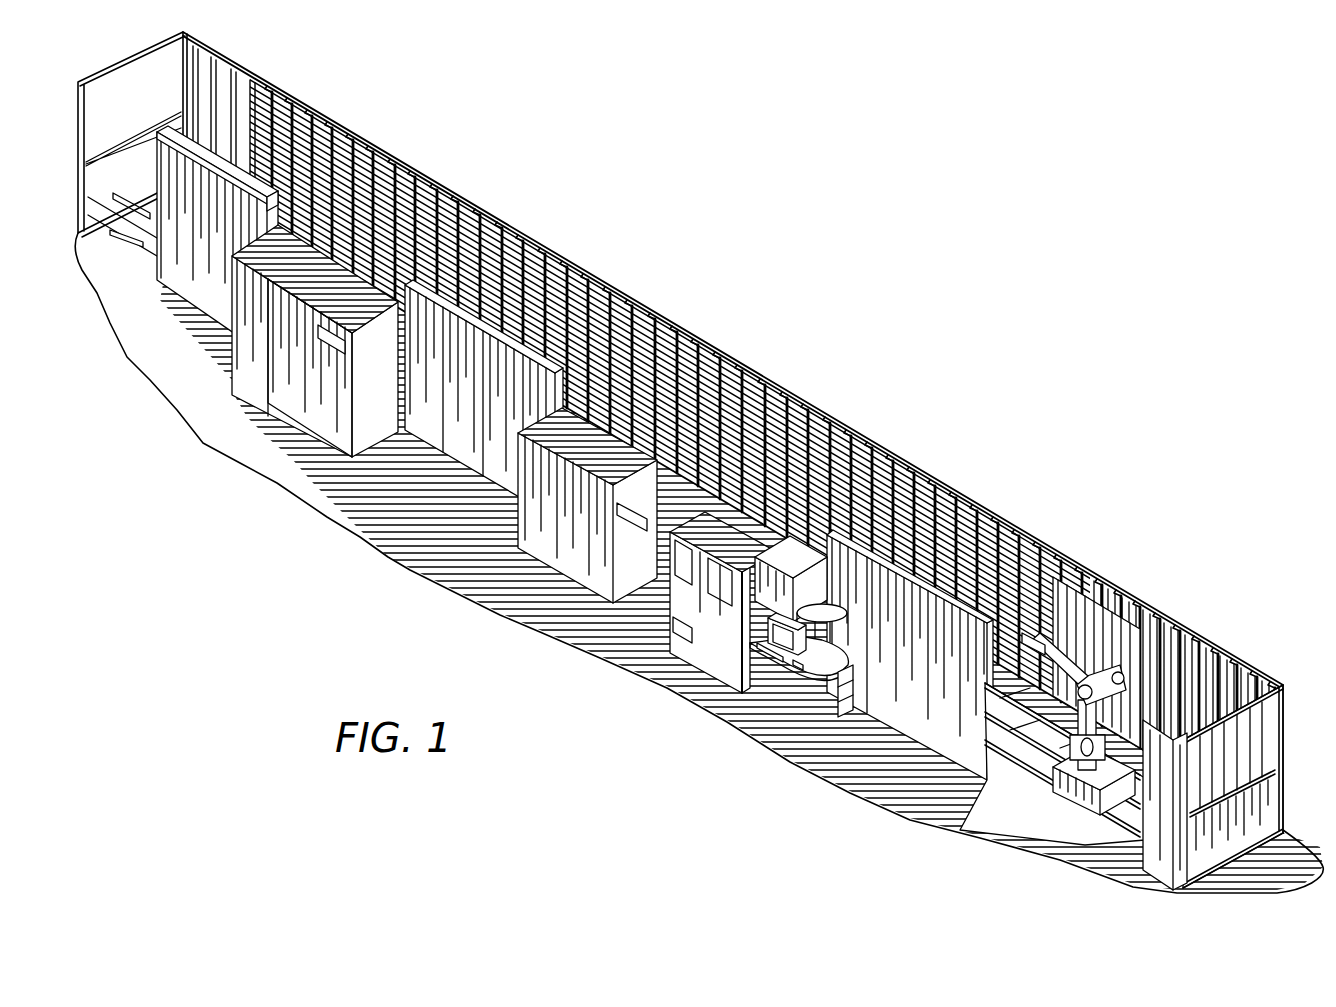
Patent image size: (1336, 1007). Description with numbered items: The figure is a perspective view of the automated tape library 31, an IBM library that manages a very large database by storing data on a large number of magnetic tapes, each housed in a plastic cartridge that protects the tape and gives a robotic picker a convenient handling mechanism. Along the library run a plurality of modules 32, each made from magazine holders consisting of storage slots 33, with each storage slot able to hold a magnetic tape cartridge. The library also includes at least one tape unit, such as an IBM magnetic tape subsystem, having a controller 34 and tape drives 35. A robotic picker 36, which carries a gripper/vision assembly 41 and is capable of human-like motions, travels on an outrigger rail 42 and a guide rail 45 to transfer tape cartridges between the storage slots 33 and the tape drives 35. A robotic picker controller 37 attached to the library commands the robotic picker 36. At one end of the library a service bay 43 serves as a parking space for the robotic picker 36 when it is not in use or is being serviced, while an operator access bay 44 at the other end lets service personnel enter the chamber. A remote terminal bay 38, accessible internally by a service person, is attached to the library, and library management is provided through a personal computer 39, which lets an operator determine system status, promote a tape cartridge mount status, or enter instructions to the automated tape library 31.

The automated tape library 31 is at (603, 192).
The modules 32 is at (183, 277).
The storage slots 33 is at (693, 350).
The controller 34 is at (320, 436).
The tape drives 35 is at (273, 378).
The robotic picker 36 is at (1150, 610).
The robotic picker controller 37 is at (712, 650).
The remote terminal bay 38 is at (790, 552).
The personal computer 39 is at (783, 660).
The gripper/vision assembly 41 is at (1030, 637).
The outrigger rail 42 is at (1008, 770).
The service bay 43 is at (1033, 720).
The operator access bay 44 is at (130, 150).
The guide rail 45 is at (1043, 747).